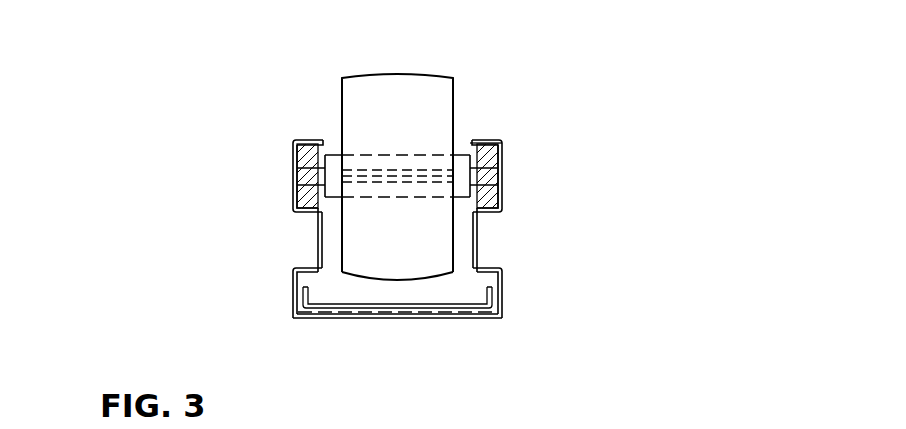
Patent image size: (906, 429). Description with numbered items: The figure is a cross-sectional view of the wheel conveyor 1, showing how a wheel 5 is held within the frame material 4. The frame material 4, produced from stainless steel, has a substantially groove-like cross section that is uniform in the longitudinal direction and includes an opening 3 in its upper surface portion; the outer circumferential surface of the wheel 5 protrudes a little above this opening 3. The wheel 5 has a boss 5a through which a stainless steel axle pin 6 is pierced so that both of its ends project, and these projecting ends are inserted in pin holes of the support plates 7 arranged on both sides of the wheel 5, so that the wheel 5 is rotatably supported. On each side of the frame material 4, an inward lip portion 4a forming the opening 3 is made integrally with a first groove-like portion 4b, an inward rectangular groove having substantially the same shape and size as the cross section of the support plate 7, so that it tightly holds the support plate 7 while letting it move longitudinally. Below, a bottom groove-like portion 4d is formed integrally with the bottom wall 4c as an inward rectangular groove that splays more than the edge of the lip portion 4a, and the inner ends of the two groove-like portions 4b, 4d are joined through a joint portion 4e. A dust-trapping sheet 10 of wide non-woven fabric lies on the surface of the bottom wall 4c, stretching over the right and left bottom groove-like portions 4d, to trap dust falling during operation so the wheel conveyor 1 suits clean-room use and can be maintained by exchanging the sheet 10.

The wheel conveyor 1 is at (464, 71).
The opening 3 is at (333, 143).
The frame material 4 is at (288, 135).
The lip portion 4a is at (480, 140).
The first groove-like portion 4b is at (612, 207).
The bottom wall 4c is at (392, 320).
The bottom groove-like portion 4d is at (560, 388).
The joint portion 4e is at (632, 263).
The wheel 5 is at (405, 73).
The boss 5a is at (502, 148).
The axle pin 6 is at (292, 157).
The support plate 7 is at (295, 139).
The dust-trapping sheet 10 is at (490, 300).